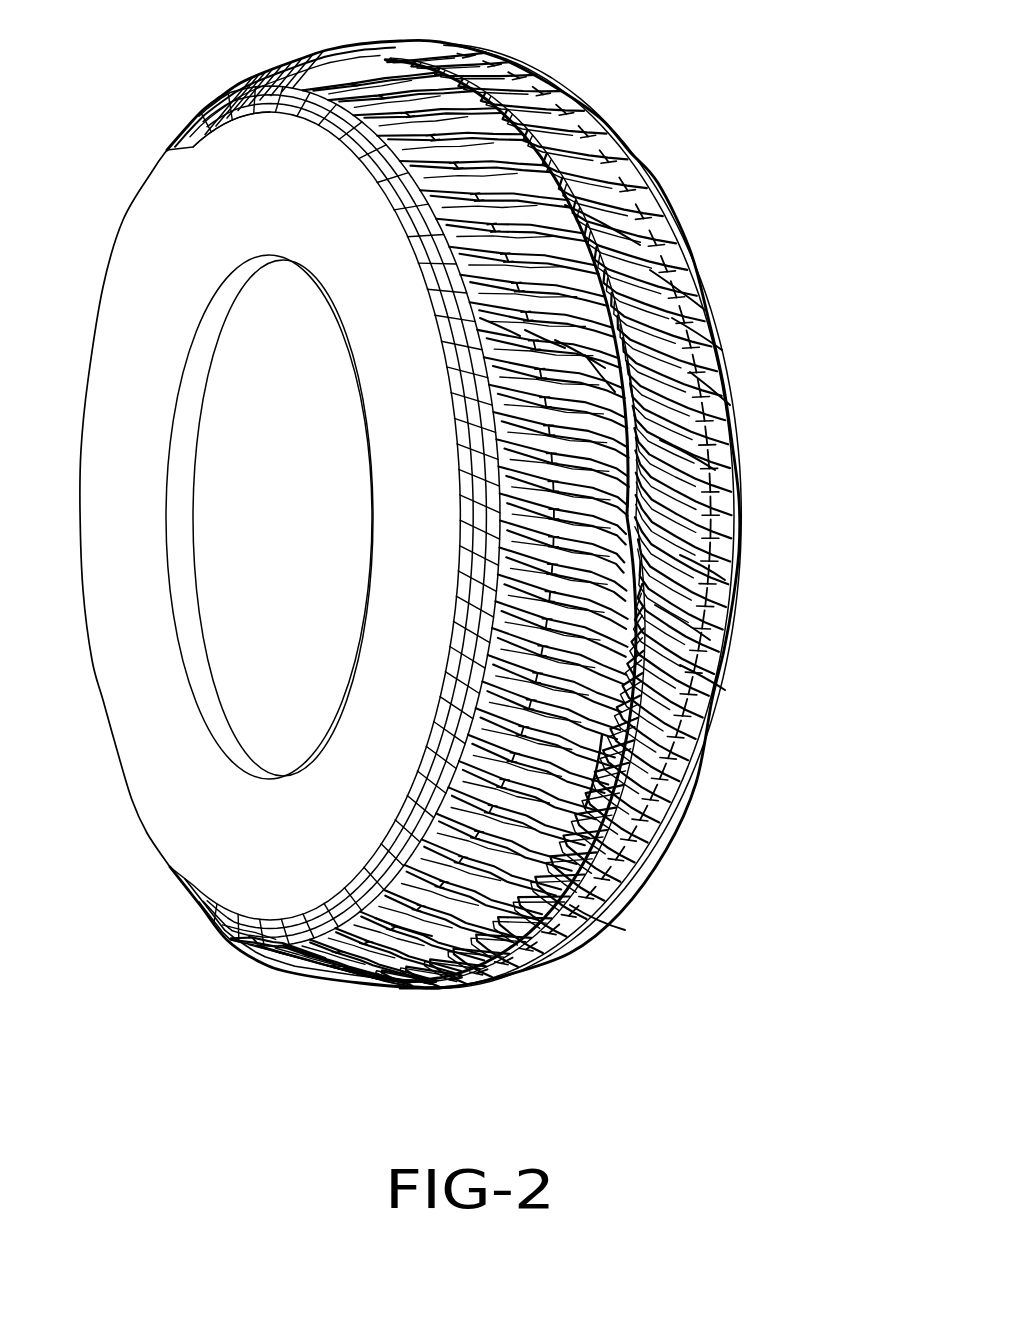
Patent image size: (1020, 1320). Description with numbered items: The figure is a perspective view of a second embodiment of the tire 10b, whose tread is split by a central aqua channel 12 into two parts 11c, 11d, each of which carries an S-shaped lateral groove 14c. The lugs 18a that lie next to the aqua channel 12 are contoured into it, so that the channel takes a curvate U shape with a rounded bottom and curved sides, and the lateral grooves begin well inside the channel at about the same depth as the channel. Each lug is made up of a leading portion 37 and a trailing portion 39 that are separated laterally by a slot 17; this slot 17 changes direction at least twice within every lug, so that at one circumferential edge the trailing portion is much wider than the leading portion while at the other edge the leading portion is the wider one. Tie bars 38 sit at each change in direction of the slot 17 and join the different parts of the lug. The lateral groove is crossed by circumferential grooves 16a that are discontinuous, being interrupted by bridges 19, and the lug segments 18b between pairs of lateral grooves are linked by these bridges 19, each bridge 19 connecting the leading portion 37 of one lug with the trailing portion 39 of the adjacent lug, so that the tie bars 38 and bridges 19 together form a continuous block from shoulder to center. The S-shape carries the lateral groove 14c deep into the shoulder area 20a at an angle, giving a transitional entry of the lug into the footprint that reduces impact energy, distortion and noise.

The tire 10b is at (230, 998).
The shoulder area 20a is at (178, 149).
The lugs adjacent to aqua channel 18a is at (603, 222).
The circumferential grooves 16a is at (677, 288).
The S-shaped lateral groove 14c is at (697, 333).
The trailing portion 39 is at (710, 387).
The leading portion 37 is at (687, 452).
The bridges 19 is at (703, 565).
The lug segments 18b is at (682, 620).
The slot 17 is at (705, 677).
The aqua channel 12 is at (590, 772).
The tread area part 11d is at (597, 922).
The tread area part 11c is at (405, 930).
The tie bars 38 is at (612, 392).